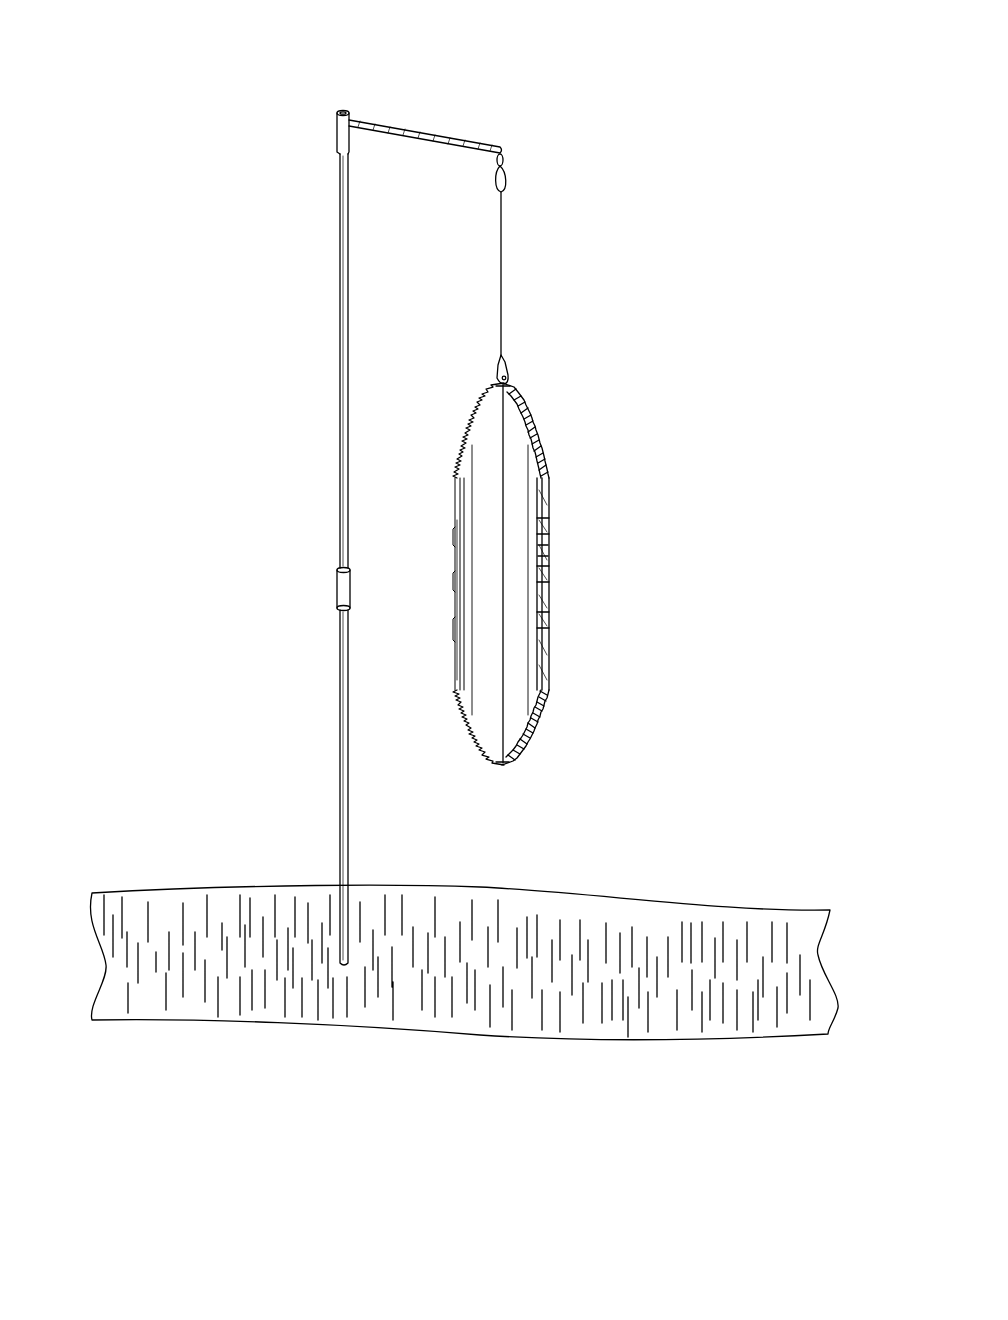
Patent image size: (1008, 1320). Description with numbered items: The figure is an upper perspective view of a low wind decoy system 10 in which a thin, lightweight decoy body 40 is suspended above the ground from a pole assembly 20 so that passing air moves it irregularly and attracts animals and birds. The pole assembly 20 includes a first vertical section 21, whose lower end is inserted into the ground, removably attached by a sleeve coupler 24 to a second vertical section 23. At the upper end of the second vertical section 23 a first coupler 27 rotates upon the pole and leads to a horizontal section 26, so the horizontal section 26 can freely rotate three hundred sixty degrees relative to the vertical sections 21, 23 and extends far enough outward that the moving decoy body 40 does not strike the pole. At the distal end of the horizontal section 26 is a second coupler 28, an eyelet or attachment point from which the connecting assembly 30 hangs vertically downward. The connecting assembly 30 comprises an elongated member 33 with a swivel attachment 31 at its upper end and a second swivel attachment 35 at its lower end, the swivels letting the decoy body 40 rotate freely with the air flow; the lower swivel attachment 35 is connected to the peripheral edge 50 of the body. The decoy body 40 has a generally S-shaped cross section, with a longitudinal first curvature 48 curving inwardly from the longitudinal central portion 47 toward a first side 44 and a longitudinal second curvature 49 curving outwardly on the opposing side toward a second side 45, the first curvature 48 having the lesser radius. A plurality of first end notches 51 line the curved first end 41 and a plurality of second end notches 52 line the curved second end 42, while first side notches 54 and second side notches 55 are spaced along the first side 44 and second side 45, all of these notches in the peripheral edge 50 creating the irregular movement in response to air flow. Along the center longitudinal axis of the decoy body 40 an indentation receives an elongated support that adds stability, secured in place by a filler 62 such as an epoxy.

The low wind decoy system 10 is at (722, 138).
The pole assembly 20 is at (186, 173).
The first vertical section 21 is at (340, 758).
The second vertical section 23 is at (340, 401).
The sleeve coupler 24 is at (337, 598).
The horizontal section 26 is at (410, 130).
The first coupler 27 is at (342, 138).
The second coupler 28 is at (504, 157).
The connecting assembly 30 is at (557, 278).
The swivel attachment 31 is at (495, 177).
The elongated member 33 is at (500, 305).
The swivel attachment 35 is at (497, 368).
The decoy body 40 is at (685, 478).
The first end 41 is at (543, 426).
The second end 42 is at (518, 733).
The first side 44 is at (550, 596).
The second side 45 is at (453, 590).
The longitudinal central portion 47 is at (497, 597).
The first curvature 48 is at (548, 554).
The second curvature 49 is at (466, 550).
The peripheral edge 50 is at (450, 474).
The first end notches 51 is at (530, 387).
The second end notches 52 is at (518, 757).
The first side notches 54 is at (550, 522).
The second side notches 55 is at (457, 528).
The filler 62 is at (500, 748).